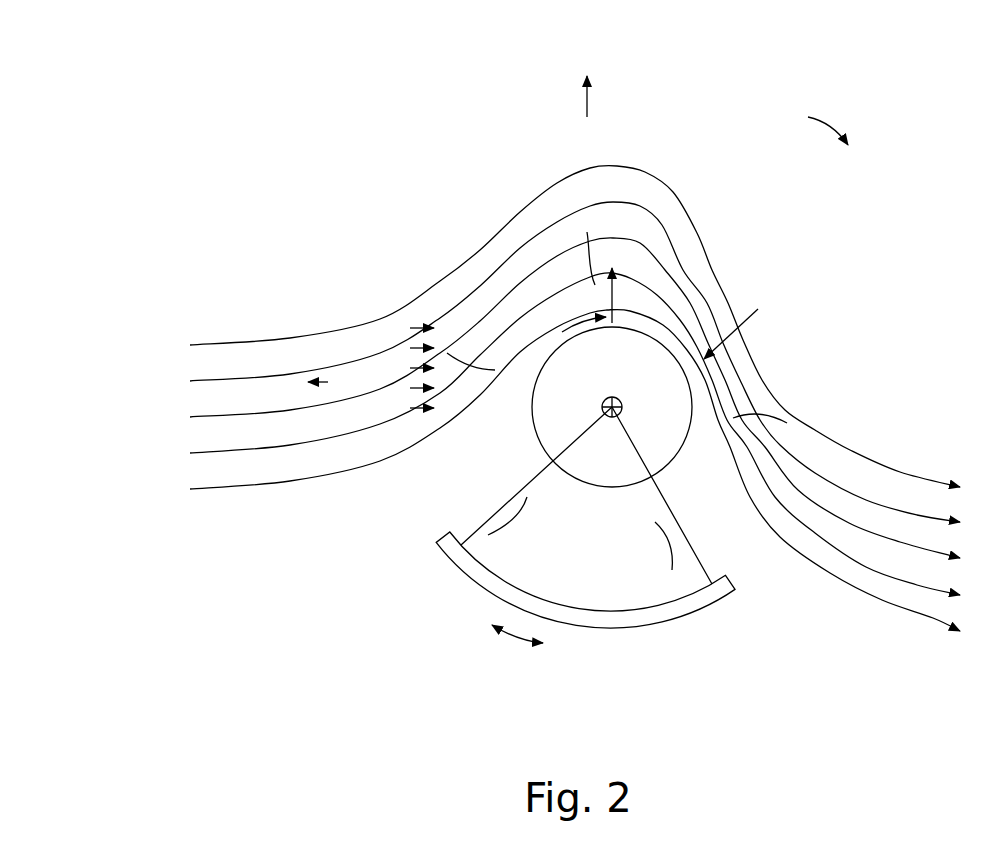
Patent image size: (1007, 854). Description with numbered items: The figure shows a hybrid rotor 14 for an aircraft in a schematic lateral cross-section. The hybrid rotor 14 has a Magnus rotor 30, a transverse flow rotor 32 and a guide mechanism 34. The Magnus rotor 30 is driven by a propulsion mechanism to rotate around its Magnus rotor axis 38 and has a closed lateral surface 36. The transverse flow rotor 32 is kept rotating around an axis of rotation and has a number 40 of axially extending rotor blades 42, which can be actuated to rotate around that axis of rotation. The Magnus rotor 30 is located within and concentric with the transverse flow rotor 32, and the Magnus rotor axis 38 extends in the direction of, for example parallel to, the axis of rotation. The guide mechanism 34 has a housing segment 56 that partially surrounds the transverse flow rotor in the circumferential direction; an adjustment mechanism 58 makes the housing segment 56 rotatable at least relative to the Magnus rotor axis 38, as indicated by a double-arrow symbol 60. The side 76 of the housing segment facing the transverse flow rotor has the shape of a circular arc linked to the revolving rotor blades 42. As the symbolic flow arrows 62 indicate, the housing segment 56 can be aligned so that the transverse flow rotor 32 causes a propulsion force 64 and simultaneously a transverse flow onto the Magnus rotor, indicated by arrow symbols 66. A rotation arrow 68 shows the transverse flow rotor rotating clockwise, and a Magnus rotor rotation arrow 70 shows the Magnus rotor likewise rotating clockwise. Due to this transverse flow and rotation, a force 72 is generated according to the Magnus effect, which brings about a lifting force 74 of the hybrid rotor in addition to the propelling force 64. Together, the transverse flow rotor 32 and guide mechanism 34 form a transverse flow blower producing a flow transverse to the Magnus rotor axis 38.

The hybrid rotor 14 is at (333, 213).
The Magnus rotor 30 is at (723, 330).
The transverse flow rotor 32 is at (580, 228).
The guide mechanism 34 is at (453, 602).
The closed lateral surface 36 is at (548, 357).
The Magnus rotor axis 38 is at (622, 400).
The number of rotor blades 40 is at (667, 138).
The rotor blades 42 is at (753, 418).
The housing segment 56 is at (565, 613).
The adjustment mechanism 58 is at (670, 500).
The double-arrow symbol 60 is at (525, 645).
The symbolic flow arrows 62 is at (875, 457).
The propulsion force 64 is at (318, 381).
The arrow symbols 66 is at (418, 328).
The rotation arrow 68 is at (830, 125).
The Magnus rotor rotation arrow 70 is at (580, 320).
The force 72 is at (613, 297).
The lifting force 74 is at (588, 97).
The side facing the transverse flow rotor 76 is at (512, 583).